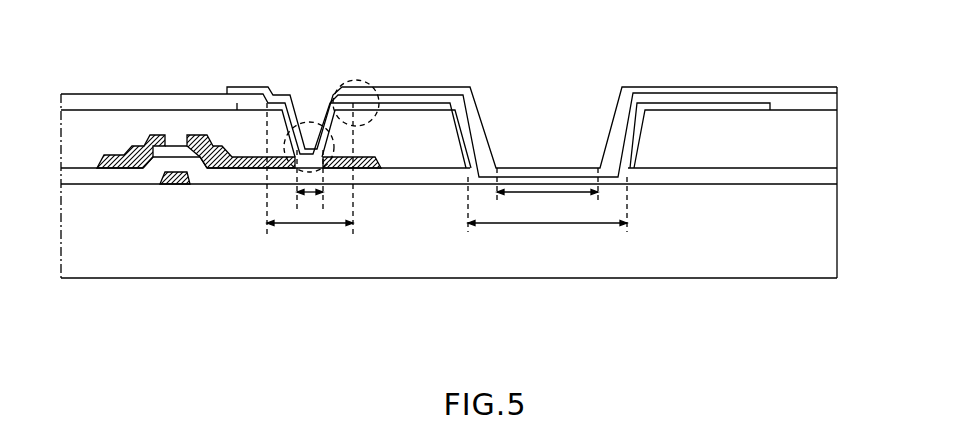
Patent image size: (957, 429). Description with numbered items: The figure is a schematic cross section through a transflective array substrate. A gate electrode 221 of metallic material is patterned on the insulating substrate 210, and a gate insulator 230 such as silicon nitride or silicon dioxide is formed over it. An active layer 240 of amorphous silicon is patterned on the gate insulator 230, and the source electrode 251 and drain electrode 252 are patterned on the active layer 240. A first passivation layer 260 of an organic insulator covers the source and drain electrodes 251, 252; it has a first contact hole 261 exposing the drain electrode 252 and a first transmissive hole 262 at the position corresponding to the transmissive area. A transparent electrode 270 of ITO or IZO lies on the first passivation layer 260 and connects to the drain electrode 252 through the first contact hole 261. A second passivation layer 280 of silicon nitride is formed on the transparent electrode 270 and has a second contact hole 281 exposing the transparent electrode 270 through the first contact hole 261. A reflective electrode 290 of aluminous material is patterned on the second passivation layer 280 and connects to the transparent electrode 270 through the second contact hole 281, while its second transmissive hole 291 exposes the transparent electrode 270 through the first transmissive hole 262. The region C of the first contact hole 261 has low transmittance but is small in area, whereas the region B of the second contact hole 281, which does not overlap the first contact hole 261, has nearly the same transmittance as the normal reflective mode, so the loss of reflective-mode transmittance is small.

The substrate 210 is at (413, 253).
The gate electrode 221 is at (178, 187).
The gate insulator 230 is at (235, 178).
The active layer 240 is at (180, 147).
The source electrode 251 is at (152, 133).
The drain electrode 252 is at (207, 133).
The first passivation layer 260 is at (78, 123).
The first contact hole 261 is at (310, 182).
The first transmissive hole 262 is at (547, 211).
The transparent electrode 270 is at (446, 93).
The second passivation layer 280 is at (112, 103).
The second contact hole 281 is at (310, 175).
The reflective electrode 290 is at (430, 88).
The second transmissive hole 291 is at (547, 191).
The region B is at (352, 80).
The region C is at (308, 122).